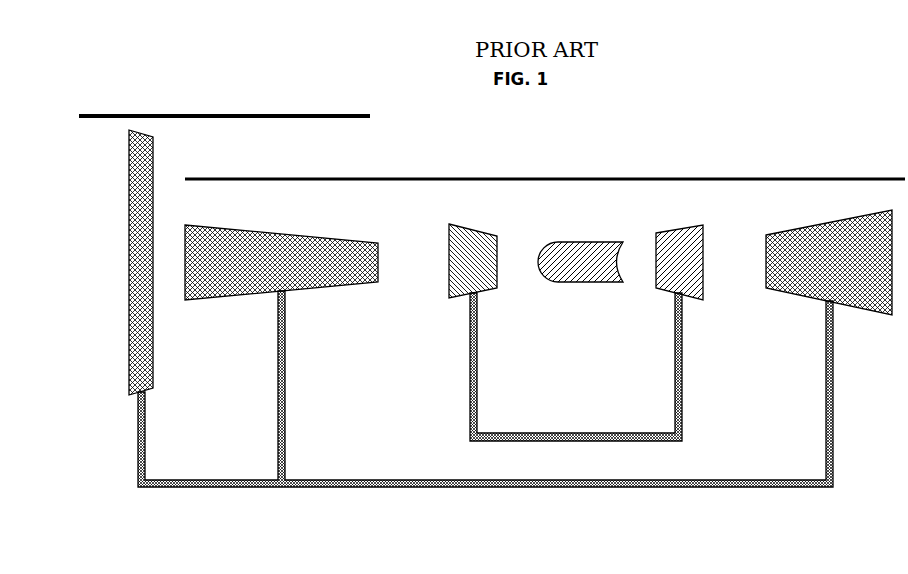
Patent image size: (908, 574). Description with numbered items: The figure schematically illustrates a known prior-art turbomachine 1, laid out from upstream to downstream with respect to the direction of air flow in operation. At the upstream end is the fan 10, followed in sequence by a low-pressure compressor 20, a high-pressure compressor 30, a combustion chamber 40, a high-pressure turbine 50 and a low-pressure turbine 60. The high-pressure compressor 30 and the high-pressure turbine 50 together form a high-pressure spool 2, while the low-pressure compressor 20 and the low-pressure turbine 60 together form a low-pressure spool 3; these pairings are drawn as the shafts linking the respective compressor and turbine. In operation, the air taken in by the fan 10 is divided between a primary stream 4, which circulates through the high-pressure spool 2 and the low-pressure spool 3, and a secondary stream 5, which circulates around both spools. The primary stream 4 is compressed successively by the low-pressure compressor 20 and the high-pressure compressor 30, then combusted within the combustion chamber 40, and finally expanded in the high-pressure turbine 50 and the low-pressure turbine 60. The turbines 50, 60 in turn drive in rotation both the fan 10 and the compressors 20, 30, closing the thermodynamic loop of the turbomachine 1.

The turbomachine 1 is at (367, 558).
The high-pressure spool 2 is at (573, 433).
The low-pressure spool 3 is at (400, 480).
The primary stream 4 is at (372, 363).
The secondary stream 5 is at (286, 155).
The fan 10 is at (148, 266).
The low-pressure compressor 20 is at (290, 266).
The high-pressure compressor 30 is at (480, 264).
The combustion chamber 40 is at (584, 264).
The high-pressure turbine 50 is at (686, 266).
The low-pressure turbine 60 is at (834, 266).